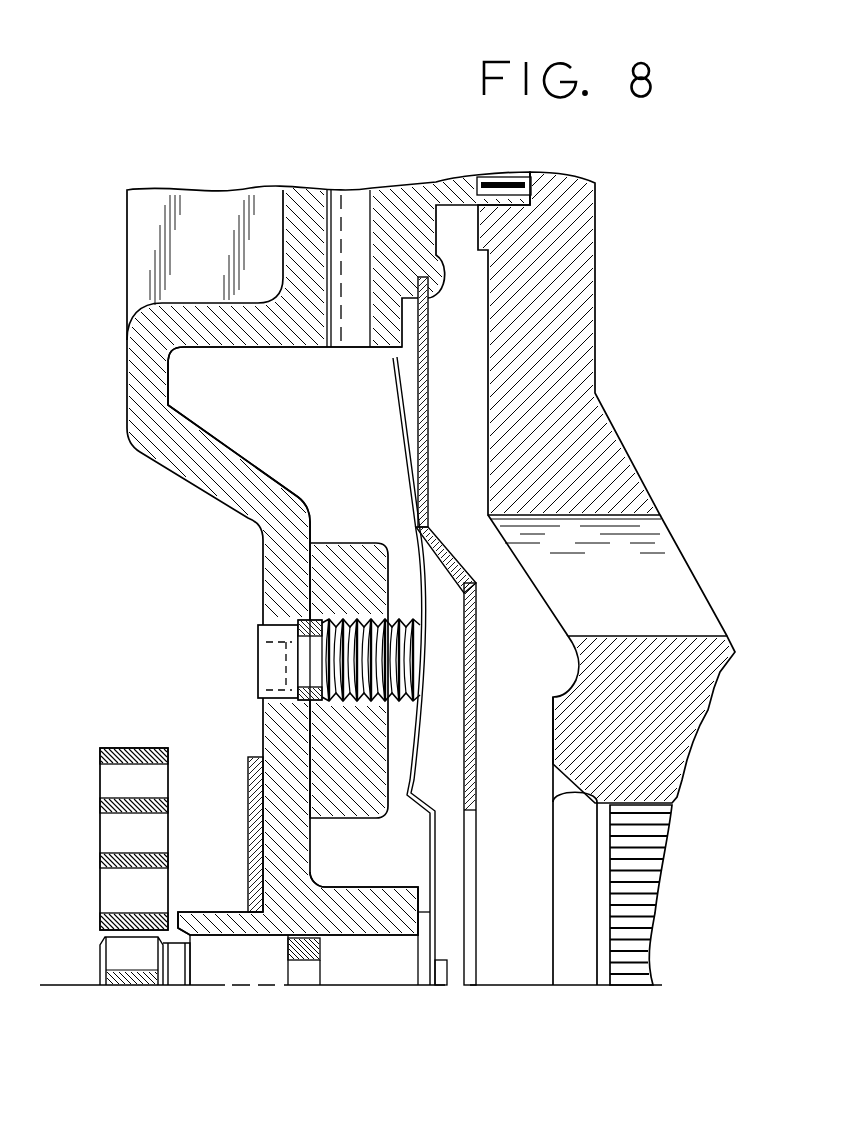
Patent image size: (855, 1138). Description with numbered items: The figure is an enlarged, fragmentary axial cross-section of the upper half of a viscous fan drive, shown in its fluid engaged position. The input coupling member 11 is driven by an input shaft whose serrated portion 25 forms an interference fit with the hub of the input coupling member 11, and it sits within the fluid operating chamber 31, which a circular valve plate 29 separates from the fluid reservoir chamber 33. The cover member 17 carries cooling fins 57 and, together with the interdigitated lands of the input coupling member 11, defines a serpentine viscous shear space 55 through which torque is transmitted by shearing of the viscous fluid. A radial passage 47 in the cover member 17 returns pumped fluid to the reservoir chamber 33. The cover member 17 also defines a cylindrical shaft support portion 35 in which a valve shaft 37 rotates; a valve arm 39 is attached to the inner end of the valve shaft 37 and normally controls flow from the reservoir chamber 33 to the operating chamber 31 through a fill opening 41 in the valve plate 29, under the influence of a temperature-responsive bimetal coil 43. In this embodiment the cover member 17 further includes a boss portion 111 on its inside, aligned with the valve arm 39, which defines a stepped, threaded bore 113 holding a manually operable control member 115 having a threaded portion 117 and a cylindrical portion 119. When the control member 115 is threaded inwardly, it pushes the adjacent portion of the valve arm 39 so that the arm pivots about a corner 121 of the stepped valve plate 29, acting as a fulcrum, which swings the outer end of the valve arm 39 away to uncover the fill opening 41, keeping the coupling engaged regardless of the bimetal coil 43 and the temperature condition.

The input coupling member 11 is at (614, 383).
The cover member 17 is at (130, 387).
The serrated portion 25 is at (648, 862).
The valve plate 29 is at (476, 746).
The fluid operating chamber 31 is at (547, 343).
The fluid reservoir chamber 33 is at (285, 445).
The shaft support portion 35 is at (390, 905).
The valve shaft 37 is at (213, 966).
The valve arm 39 is at (398, 440).
The fill opening 41 is at (423, 362).
The bimetal coil 43 is at (100, 773).
The radial passage 47 is at (347, 212).
The viscous shear space 55 is at (532, 190).
The cooling fins 57 is at (137, 227).
The boss portion 111 is at (362, 548).
The stepped, threaded bore 113 is at (262, 626).
The manually operable control member 115 is at (252, 682).
The threaded portion 117 is at (350, 704).
The cylindrical portion 119 is at (272, 704).
The corner 121 is at (428, 530).